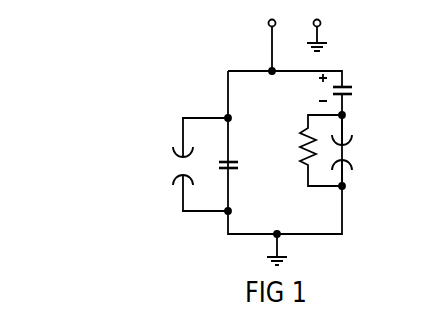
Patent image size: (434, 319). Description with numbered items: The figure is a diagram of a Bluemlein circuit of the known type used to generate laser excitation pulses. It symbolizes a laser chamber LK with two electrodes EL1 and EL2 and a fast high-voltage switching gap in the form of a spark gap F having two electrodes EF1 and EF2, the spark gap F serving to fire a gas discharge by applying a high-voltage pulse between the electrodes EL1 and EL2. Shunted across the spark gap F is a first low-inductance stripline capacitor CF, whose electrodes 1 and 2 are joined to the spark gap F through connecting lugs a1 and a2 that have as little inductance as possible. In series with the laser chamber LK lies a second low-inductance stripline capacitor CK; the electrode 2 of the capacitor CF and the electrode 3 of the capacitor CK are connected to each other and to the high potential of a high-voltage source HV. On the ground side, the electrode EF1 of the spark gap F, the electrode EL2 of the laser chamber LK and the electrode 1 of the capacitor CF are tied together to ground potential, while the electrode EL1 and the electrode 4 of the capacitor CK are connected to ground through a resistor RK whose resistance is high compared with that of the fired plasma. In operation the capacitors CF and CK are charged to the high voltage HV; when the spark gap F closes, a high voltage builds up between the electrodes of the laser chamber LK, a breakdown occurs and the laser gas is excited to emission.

The high-voltage source HV is at (294, 43).
The connecting lug a2 is at (209, 118).
The connecting lug a1 is at (213, 212).
The spark gap F is at (163, 166).
The electrode of the spark gap EF2 is at (172, 150).
The electrode of the spark gap EF1 is at (175, 166).
The first low-inductance stripline capacitor CF is at (247, 166).
The electrode of the first capacitor 2 is at (240, 161).
The electrode of the first capacitor 1 is at (252, 165).
The second low-inductance stripline capacitor CK is at (338, 89).
The electrode of the second capacitor 3 is at (353, 87).
The electrode of the second capacitor 4 is at (354, 95).
The resistor RK is at (300, 141).
The laser chamber LK is at (366, 160).
The electrode of the laser chamber EL1 is at (356, 137).
The electrode of the laser chamber EL2 is at (355, 151).